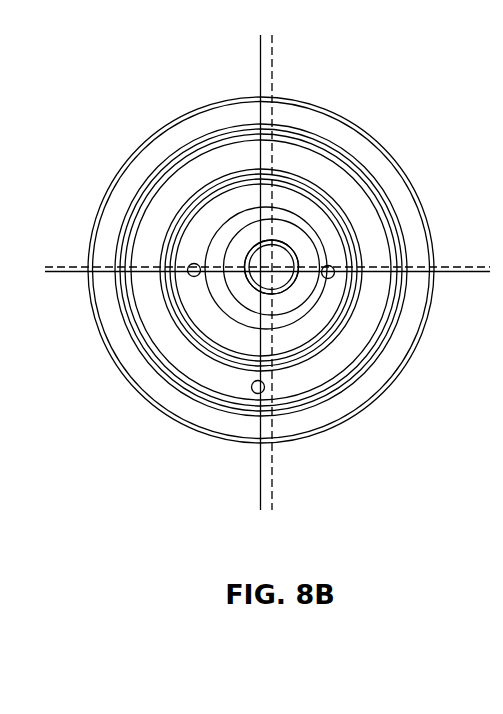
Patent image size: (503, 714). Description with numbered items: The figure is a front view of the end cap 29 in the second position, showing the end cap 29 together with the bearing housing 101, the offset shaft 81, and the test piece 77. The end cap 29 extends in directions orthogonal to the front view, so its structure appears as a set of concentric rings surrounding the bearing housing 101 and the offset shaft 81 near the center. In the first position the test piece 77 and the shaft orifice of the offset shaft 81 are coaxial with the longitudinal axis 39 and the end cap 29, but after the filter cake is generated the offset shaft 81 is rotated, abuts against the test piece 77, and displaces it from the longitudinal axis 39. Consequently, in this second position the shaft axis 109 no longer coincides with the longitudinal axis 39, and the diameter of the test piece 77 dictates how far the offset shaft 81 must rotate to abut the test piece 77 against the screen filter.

The end cap 29 is at (103, 313).
The bearing housing 101 is at (292, 163).
The offset shaft 81 is at (222, 243).
The shaft axis 109 is at (300, 258).
The longitudinal axis 39 is at (258, 287).
The test piece 77 is at (280, 288).